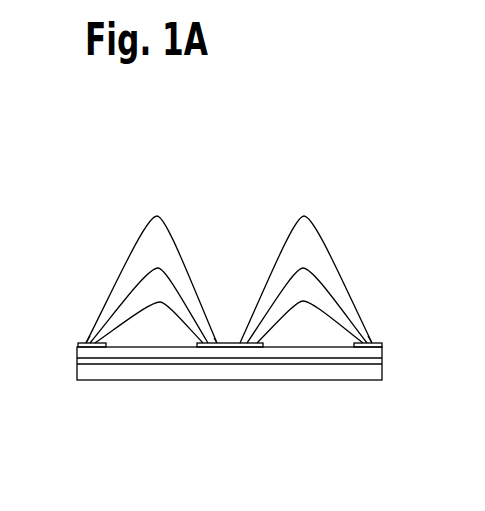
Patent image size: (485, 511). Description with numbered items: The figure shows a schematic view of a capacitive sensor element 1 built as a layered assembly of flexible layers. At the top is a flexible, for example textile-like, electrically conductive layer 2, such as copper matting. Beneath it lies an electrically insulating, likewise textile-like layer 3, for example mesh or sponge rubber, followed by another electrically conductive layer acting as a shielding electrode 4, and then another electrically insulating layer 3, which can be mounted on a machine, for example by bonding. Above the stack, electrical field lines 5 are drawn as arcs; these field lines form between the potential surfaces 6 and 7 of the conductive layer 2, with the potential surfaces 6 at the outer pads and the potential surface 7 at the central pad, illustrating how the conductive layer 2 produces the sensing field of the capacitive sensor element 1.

The capacitive sensor element 1 is at (230, 307).
The electrically conductive layer 2 is at (78, 343).
The electrically insulating layer 3 is at (86, 352).
The shielding electrode 4 is at (380, 364).
The electrical field lines 5 is at (160, 214).
The potential surface 6 is at (88, 342).
The potential surface 7 is at (235, 341).